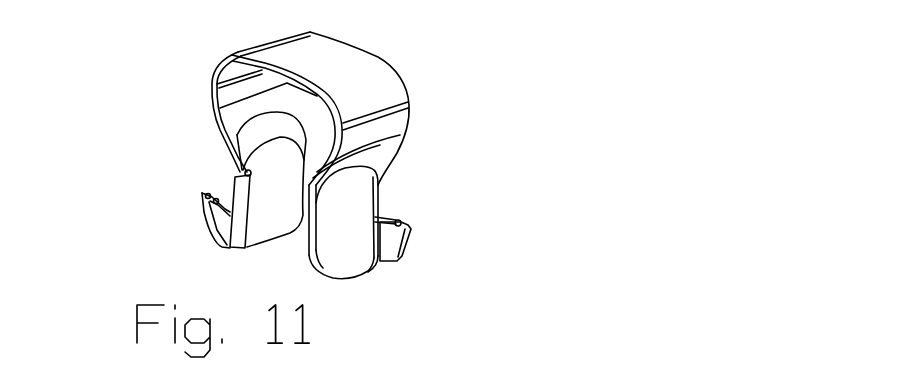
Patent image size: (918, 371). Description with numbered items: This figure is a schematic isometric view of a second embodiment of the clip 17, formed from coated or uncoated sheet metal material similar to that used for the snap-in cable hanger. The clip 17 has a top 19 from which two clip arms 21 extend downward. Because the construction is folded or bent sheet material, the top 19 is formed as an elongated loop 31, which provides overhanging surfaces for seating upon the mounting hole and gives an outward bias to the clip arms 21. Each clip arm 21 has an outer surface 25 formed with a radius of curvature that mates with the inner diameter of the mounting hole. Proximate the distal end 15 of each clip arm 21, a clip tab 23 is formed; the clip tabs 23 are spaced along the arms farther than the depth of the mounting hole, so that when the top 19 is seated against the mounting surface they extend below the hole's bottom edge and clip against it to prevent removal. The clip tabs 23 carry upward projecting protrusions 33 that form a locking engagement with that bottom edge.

The distal end 15 is at (383, 318).
The clip 17 is at (197, 80).
The top 19 is at (455, 22).
The clip arm 21 is at (548, 320).
The clip tab 23 is at (552, 227).
The outer surface 25 is at (552, 123).
The elongated loop 31 is at (550, 53).
The upward projecting protrusion 33 is at (550, 177).